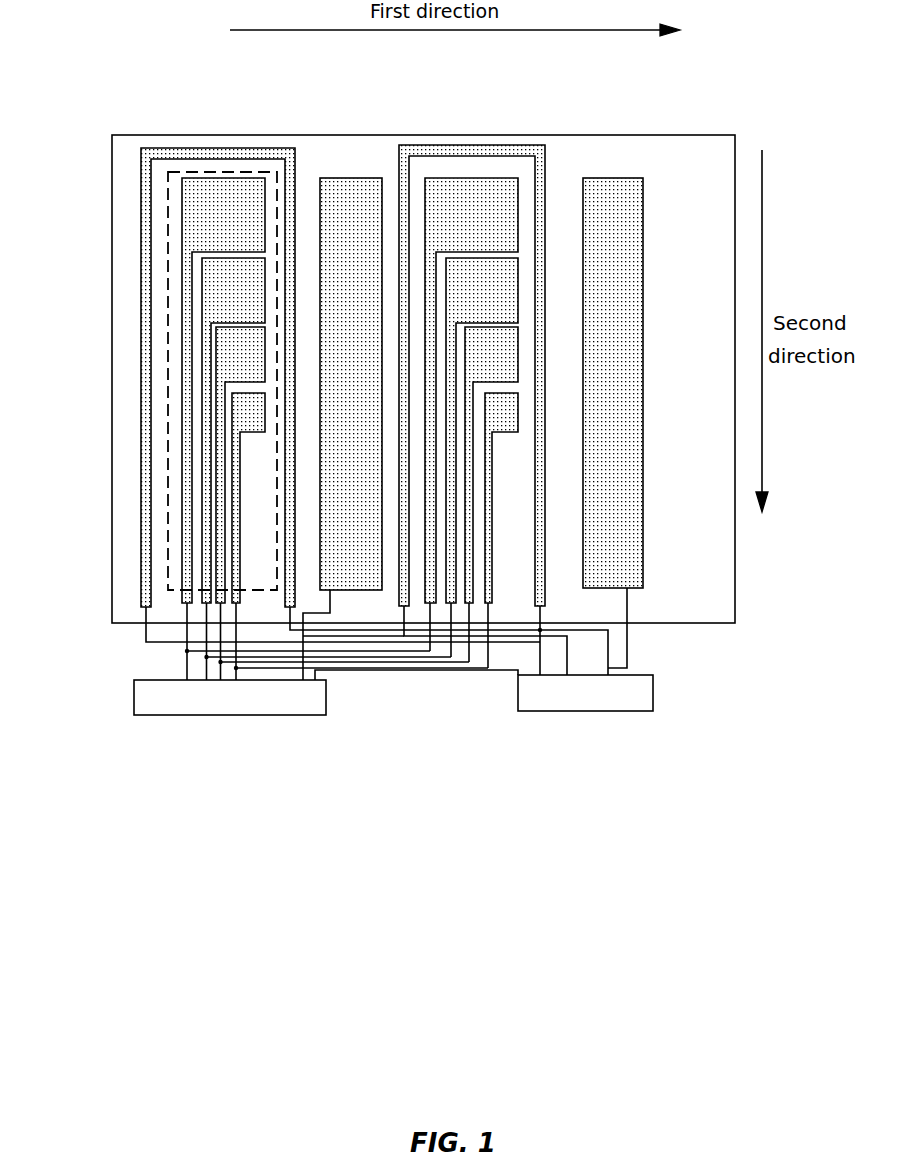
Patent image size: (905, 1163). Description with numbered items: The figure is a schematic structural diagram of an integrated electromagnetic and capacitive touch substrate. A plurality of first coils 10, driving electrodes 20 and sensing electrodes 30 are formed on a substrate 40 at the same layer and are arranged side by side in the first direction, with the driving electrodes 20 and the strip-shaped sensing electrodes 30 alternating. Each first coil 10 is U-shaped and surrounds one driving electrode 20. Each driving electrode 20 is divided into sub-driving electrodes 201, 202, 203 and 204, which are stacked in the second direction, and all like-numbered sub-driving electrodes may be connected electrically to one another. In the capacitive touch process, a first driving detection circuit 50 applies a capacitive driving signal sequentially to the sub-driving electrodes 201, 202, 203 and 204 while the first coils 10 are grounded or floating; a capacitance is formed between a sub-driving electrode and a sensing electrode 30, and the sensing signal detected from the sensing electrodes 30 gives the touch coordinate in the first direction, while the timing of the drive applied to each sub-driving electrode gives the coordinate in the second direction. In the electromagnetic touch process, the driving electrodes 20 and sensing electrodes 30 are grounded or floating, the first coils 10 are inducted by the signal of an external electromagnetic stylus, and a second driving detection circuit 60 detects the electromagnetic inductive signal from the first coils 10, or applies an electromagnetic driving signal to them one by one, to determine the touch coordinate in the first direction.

The first coil 10 is at (246, 148).
The driving electrode 20 is at (166, 512).
The sub-driving electrode 201 is at (216, 186).
The sub-driving electrode 202 is at (222, 290).
The sub-driving electrode 203 is at (241, 348).
The sub-driving electrode 204 is at (246, 415).
The sensing electrode 30 is at (366, 178).
The substrate 40 is at (626, 148).
The first driving detection circuit 50 is at (326, 692).
The second driving detection circuit 60 is at (585, 693).